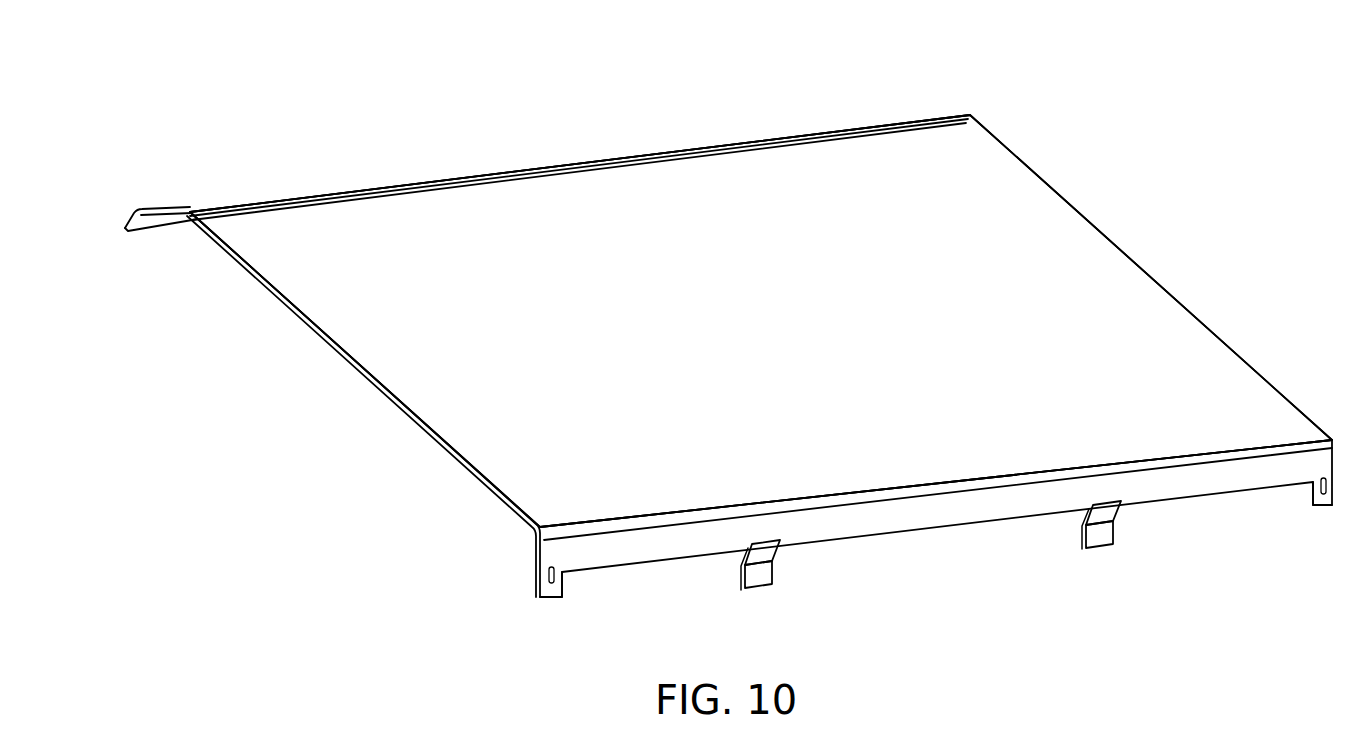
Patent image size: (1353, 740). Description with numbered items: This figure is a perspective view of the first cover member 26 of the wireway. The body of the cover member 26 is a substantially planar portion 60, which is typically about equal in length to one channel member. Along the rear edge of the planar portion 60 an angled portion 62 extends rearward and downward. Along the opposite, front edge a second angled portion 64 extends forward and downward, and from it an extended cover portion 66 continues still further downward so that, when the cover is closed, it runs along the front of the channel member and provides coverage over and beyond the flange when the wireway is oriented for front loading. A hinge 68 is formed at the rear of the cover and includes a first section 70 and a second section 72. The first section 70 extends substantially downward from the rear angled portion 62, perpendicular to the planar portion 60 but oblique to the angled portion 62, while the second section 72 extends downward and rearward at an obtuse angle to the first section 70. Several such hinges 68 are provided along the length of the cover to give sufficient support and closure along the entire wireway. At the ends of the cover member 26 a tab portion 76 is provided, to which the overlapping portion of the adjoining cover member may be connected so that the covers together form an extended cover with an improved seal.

The cover member 26 is at (600, 131).
The planar portion 60 is at (753, 328).
The angled portion 62 is at (633, 556).
The second angled portion 64 is at (166, 212).
The extended cover portion 66 is at (131, 222).
The hinge 68 is at (901, 560).
The first section 70 is at (745, 556).
The second section 72 is at (782, 568).
The tab portion 76 is at (540, 592).